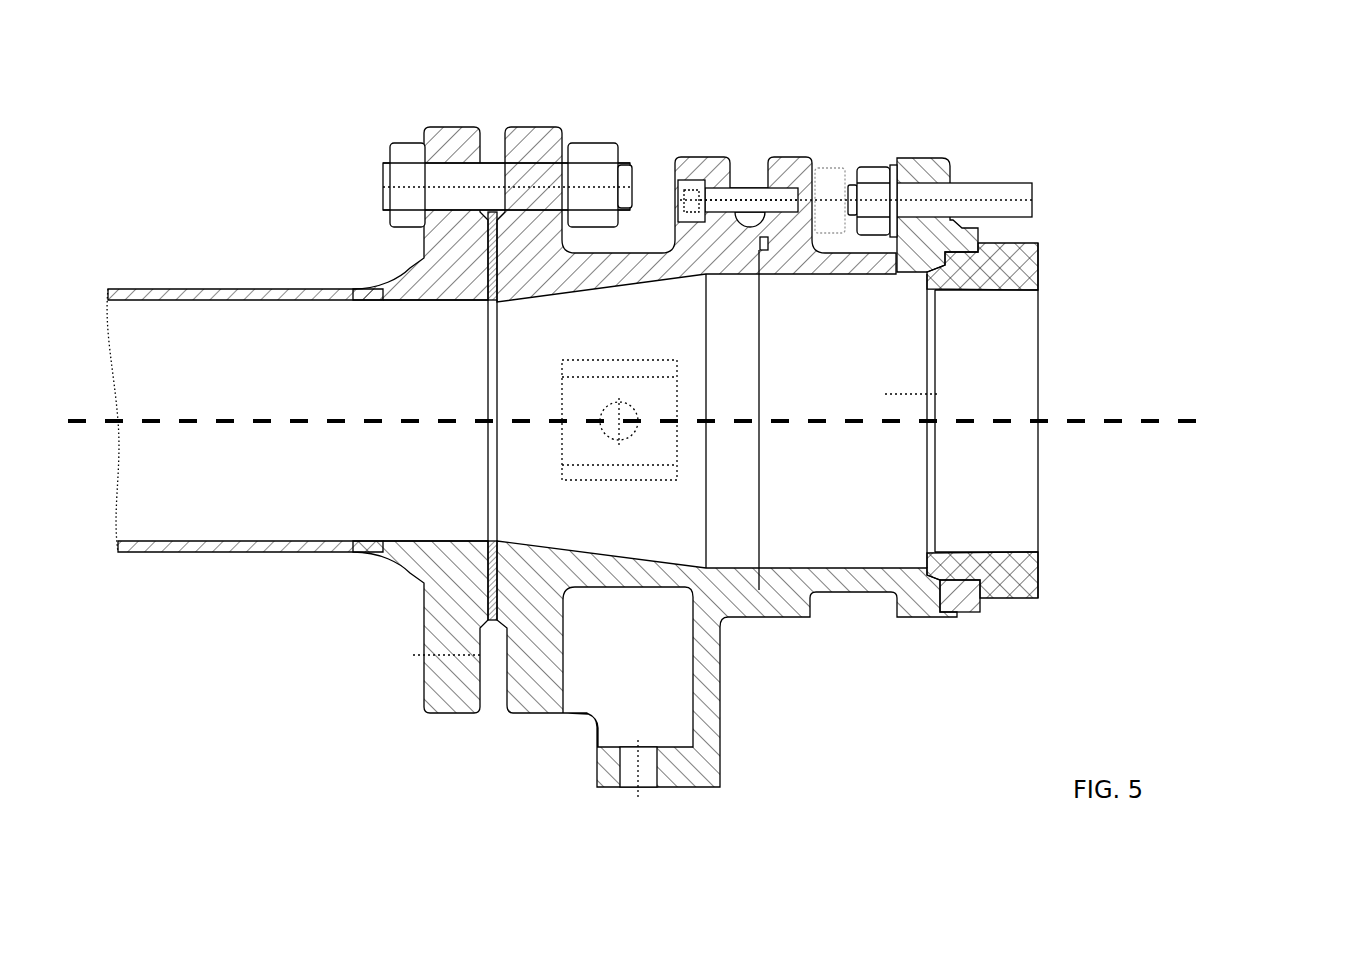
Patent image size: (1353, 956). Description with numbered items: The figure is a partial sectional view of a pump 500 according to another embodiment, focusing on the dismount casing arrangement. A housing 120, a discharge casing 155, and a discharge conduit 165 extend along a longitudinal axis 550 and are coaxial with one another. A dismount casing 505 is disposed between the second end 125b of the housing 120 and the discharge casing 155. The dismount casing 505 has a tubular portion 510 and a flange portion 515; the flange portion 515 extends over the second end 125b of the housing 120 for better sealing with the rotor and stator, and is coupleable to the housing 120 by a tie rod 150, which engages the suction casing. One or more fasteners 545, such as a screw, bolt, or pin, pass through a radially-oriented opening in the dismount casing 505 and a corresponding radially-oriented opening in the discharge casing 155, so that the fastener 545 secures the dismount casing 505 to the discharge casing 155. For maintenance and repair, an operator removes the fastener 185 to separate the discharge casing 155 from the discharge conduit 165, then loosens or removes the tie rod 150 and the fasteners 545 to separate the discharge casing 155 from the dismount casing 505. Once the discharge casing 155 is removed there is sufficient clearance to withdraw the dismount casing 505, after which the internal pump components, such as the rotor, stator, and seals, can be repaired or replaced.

The housing 120 is at (1044, 235).
The second end of the housing 125b is at (999, 156).
The tie rod 150 is at (962, 182).
The discharge casing 155 is at (540, 100).
The discharge conduit 165 is at (168, 255).
The fastener 185 is at (492, 160).
The pump 500 is at (1259, 111).
The dismount casing 505 is at (821, 103).
The tubular portion 510 is at (824, 648).
The flange portion 515 is at (940, 149).
The fastener 545 is at (745, 186).
The longitudinal axis 550 is at (1189, 406).